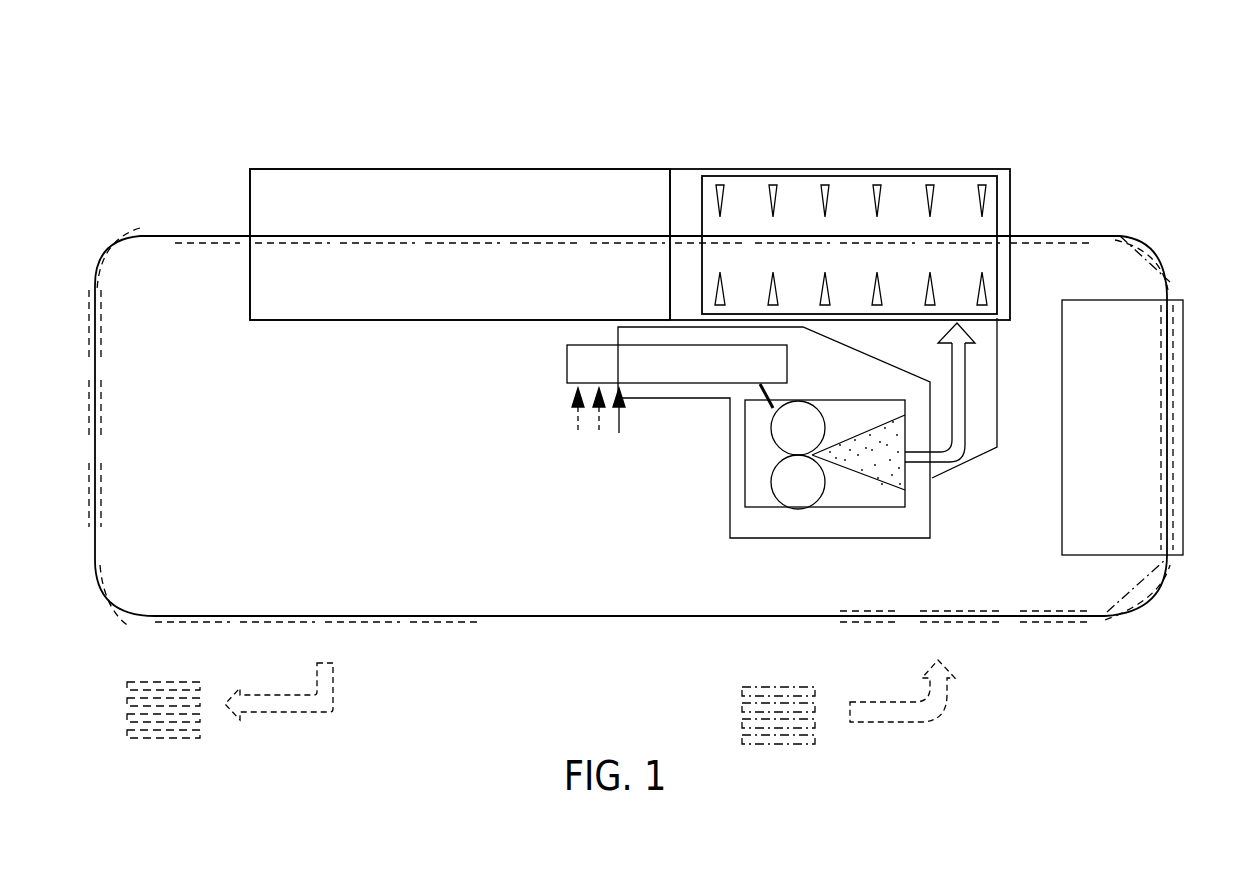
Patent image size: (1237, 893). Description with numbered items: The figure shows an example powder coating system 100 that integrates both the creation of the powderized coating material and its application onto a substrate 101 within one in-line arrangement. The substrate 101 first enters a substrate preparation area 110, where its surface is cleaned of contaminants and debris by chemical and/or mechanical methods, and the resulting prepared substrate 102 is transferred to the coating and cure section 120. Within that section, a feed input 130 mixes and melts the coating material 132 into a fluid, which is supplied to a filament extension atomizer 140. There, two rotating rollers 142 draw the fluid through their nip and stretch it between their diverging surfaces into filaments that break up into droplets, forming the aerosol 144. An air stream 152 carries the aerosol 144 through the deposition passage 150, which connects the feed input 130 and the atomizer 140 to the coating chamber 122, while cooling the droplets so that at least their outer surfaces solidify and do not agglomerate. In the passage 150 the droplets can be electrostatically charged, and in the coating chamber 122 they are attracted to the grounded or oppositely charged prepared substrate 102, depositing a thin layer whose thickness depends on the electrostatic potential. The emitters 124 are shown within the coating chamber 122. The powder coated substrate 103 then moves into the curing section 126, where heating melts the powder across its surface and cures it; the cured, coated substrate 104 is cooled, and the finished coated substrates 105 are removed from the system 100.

The powder coating system 100 is at (1024, 103).
The substrate 101 is at (758, 682).
The prepared substrate 102 is at (1160, 345).
The powder coated substrate 103 is at (712, 235).
The cured, coated substrate 104 is at (292, 235).
The coated substrates 105 is at (178, 682).
The substrate preparation area 110 is at (1062, 538).
The coating and cure section 120 is at (586, 156).
The coating chamber 122 is at (870, 170).
The emitter electrodes 124 is at (985, 196).
The curing section 126 is at (313, 169).
The feed input 130 is at (566, 372).
The coating material 132 is at (628, 438).
The filament extension atomizer 140 is at (785, 512).
The rollers 142 is at (780, 482).
The aerosol 144 is at (880, 465).
The deposition passage 150 is at (998, 357).
The air stream 152 is at (957, 447).